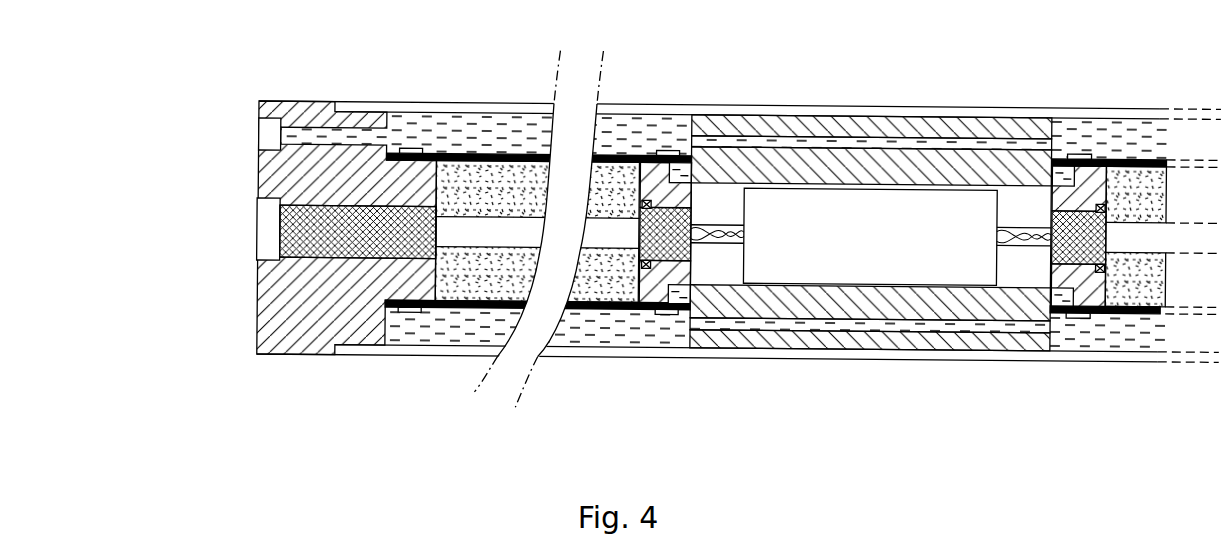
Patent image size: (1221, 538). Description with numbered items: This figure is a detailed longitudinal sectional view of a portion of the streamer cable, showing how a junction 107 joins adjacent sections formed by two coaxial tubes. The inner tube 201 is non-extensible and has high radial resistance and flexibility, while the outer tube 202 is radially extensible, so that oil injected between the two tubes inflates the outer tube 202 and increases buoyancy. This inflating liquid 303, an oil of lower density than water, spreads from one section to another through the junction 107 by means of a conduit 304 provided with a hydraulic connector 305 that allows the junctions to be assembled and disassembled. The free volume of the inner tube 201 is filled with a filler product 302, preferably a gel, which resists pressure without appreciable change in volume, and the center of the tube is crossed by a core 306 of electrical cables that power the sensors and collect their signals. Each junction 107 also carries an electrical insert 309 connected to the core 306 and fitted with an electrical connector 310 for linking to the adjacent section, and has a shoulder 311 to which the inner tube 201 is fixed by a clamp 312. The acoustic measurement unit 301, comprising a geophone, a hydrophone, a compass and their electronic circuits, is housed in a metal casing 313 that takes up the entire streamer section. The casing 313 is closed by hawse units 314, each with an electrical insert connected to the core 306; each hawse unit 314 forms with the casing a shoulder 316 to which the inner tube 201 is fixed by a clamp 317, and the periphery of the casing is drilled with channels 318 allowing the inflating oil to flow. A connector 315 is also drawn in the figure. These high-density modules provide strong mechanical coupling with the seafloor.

The junction 107 is at (322, 343).
The inner tube 201 is at (622, 306).
The outer tube 202 is at (772, 108).
The acoustic measurement unit 301 is at (928, 270).
The filler product 302 is at (627, 175).
The liquid 303 is at (478, 130).
The conduit 304 is at (323, 128).
The hydraulic connector 305 is at (257, 128).
The core 306 is at (487, 240).
The electrical insert 309 is at (297, 203).
The electrical connector 310 is at (258, 245).
The shoulder 311 is at (400, 148).
The clamp 312 is at (417, 152).
The metal casing 313 is at (843, 302).
The hawse unit 314 is at (1122, 305).
The connector piece 315 is at (1080, 255).
The shoulder 316 is at (1053, 161).
The clamp 317 is at (1083, 157).
The channel 318 is at (973, 145).